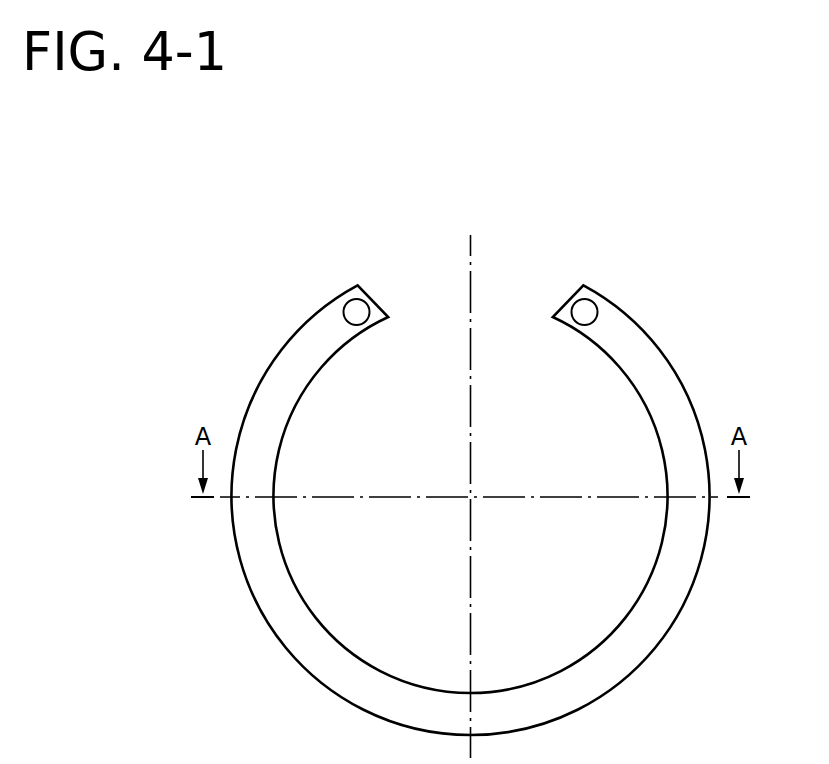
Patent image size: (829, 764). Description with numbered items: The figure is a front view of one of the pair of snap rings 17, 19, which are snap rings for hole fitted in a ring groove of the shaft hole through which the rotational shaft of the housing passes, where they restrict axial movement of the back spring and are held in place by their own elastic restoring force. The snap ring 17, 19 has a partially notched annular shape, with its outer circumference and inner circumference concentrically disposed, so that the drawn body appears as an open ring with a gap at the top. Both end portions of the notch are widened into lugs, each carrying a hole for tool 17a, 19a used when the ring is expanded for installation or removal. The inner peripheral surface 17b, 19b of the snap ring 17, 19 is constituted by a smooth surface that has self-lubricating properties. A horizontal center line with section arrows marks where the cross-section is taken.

The snap ring 17 is at (503, 510).
The snap ring 19 is at (655, 378).
The hole for tool 17a is at (466, 283).
The hole for tool 19a is at (355, 310).
The inner peripheral surface 17b is at (470, 646).
The inner peripheral surface 19b is at (345, 642).